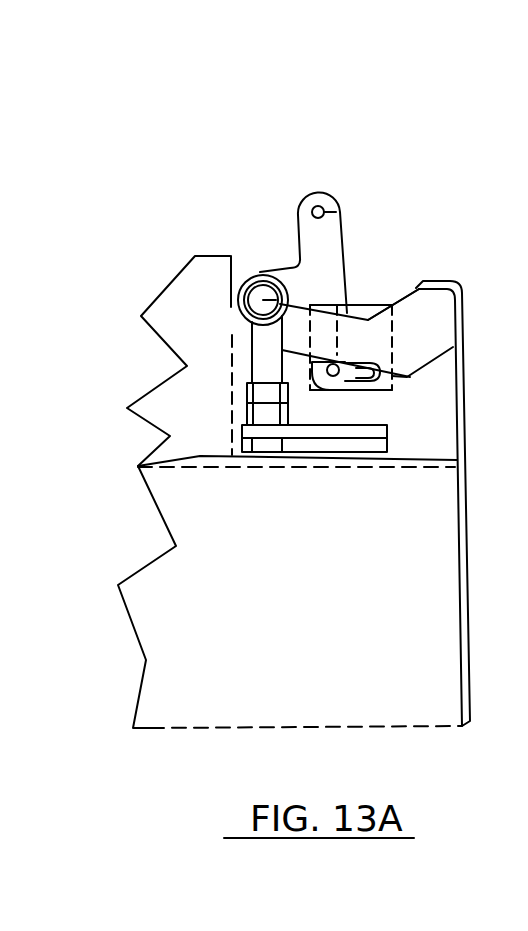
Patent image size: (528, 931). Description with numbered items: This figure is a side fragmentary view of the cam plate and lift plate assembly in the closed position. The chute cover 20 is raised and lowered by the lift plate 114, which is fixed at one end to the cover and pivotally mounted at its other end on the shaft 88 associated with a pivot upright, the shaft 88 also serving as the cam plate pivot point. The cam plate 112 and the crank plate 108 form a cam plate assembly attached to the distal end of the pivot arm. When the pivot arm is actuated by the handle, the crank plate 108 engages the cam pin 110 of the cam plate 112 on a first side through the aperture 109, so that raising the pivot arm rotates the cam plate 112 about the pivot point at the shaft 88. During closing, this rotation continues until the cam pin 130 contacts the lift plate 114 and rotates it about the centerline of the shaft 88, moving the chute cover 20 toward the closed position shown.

The chute cover 20 is at (465, 583).
The shaft 88 is at (263, 299).
The crank plate 108 is at (369, 428).
The aperture 109 is at (364, 378).
The cam pin 110 is at (333, 376).
The cam plate 112 is at (310, 237).
The lift plate 114 is at (418, 285).
The cam pin 130 is at (315, 207).